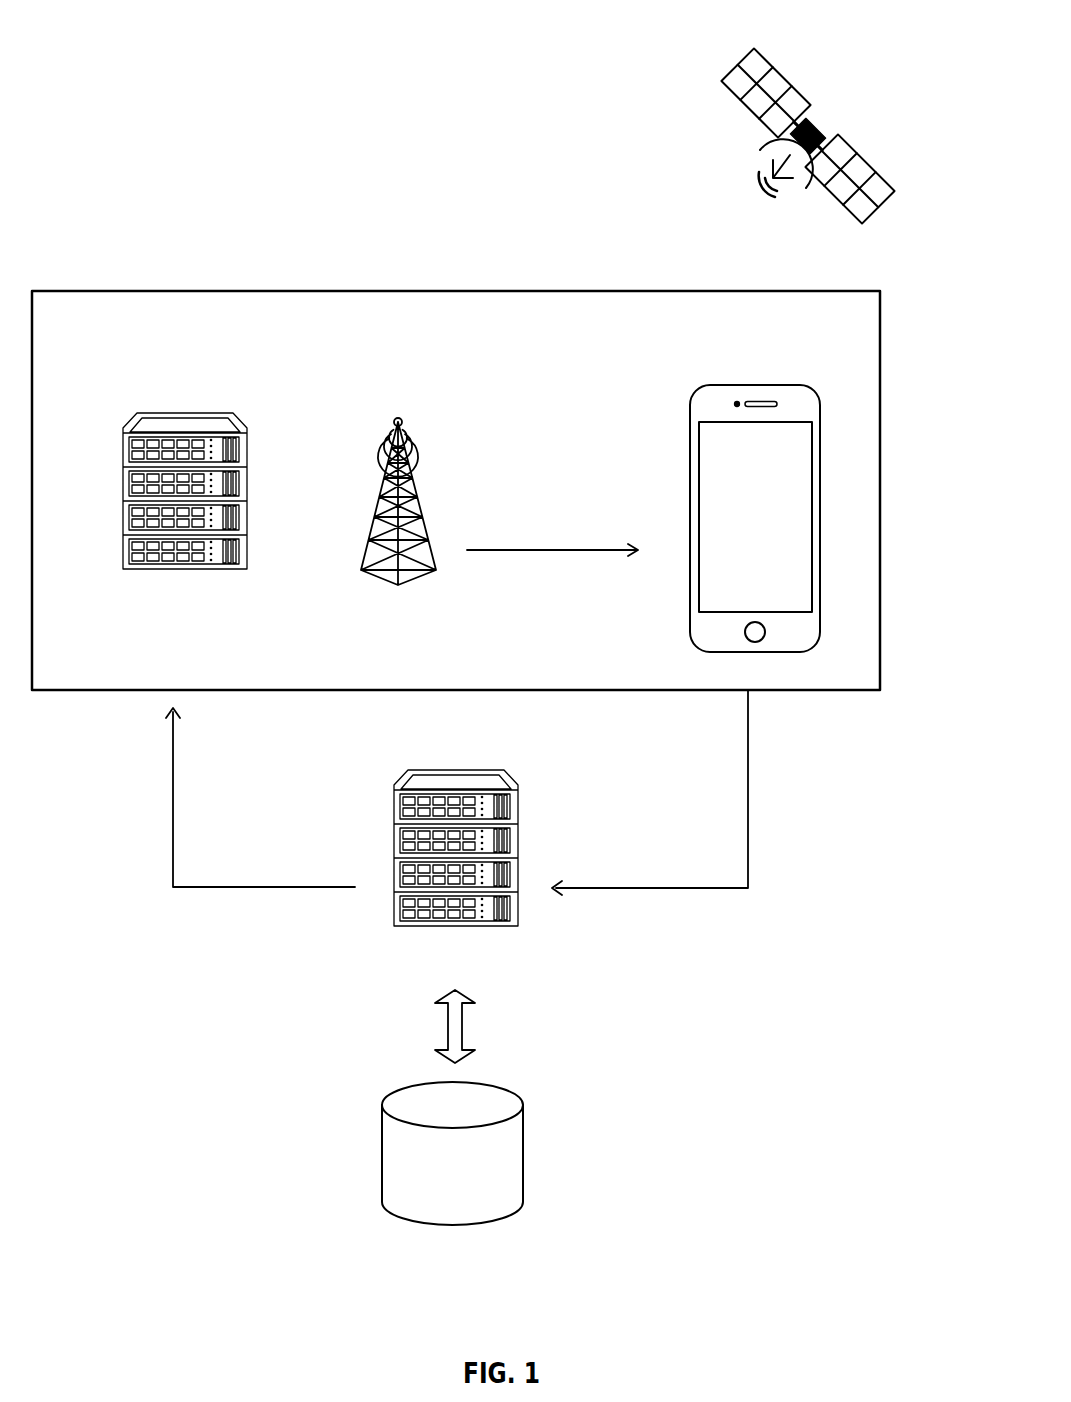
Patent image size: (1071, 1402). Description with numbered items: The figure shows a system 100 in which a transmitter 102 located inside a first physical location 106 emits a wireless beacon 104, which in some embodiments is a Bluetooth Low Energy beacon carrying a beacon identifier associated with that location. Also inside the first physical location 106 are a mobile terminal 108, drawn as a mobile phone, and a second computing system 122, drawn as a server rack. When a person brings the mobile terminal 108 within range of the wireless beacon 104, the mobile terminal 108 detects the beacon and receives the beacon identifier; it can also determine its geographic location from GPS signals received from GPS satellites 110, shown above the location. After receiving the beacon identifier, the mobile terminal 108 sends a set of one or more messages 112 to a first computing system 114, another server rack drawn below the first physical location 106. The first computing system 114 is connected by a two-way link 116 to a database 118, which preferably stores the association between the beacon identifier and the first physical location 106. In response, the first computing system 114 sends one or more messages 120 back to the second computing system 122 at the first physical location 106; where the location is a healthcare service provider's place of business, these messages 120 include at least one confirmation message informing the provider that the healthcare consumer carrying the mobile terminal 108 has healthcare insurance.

The system 100 is at (222, 150).
The transmitter 102 is at (422, 420).
The wireless beacon 104 is at (540, 552).
The first physical location 106 is at (457, 291).
The mobile terminal 108 is at (690, 448).
The GPS satellites 110 is at (815, 120).
The messages 112 is at (748, 818).
The first computing system 114 is at (519, 850).
The communication link between first computing system and database 116 is at (465, 1028).
The database 118 is at (523, 1152).
The messages 120 is at (173, 808).
The second computing system 122 is at (247, 452).